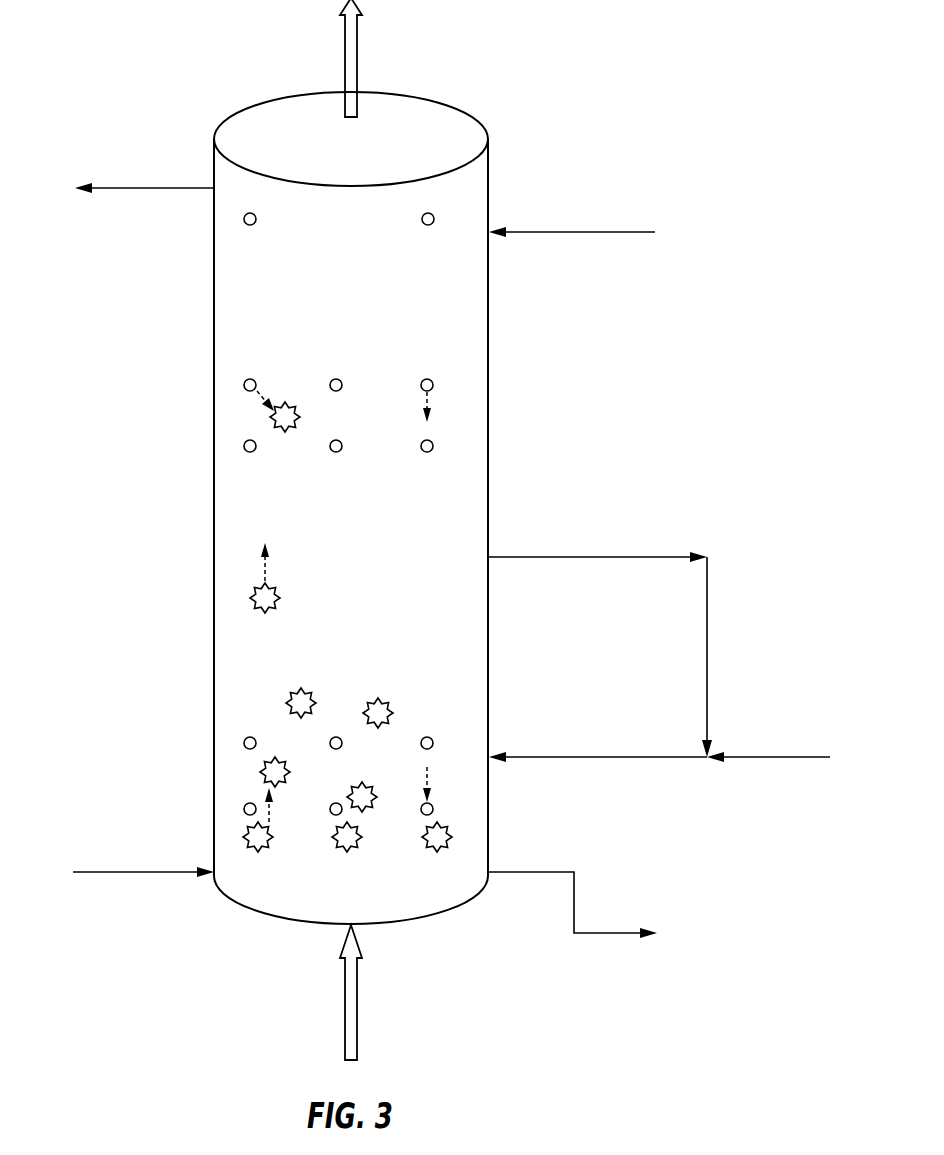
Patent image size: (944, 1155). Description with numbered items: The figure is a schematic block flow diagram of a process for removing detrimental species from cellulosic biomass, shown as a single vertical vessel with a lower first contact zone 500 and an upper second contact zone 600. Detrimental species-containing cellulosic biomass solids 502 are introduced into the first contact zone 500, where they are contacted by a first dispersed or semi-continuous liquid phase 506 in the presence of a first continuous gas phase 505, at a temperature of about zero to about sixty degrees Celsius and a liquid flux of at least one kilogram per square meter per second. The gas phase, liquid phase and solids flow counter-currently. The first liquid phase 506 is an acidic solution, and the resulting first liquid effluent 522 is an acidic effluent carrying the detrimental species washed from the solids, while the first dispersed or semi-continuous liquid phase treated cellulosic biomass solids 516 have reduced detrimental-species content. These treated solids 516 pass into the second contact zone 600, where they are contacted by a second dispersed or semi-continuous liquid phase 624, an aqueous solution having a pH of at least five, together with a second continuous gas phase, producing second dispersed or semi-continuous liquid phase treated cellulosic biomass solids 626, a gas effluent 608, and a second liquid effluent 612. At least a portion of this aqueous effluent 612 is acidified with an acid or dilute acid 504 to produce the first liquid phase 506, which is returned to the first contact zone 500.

The first contact zone 500 is at (376, 672).
The detrimental species-containing cellulosic biomass solids 502 is at (357, 1008).
The acid or dilute acid 504 is at (766, 757).
The first continuous gas phase 505 is at (114, 872).
The first dispersed or semi-continuous liquid phase 506 is at (560, 757).
The first dispersed or semi-continuous liquid phase treated cellulosic biomass solid 516 is at (288, 428).
The first liquid effluent 522 is at (560, 872).
The second contact zone 600 is at (375, 279).
The gas effluent 608 is at (114, 188).
The second liquid effluent 612 is at (560, 557).
The second dispersed or semi-continuous liquid phase 624 is at (562, 232).
The second dispersed or semi-continuous liquid phase treated cellulosic biomass soli 626 is at (357, 68).